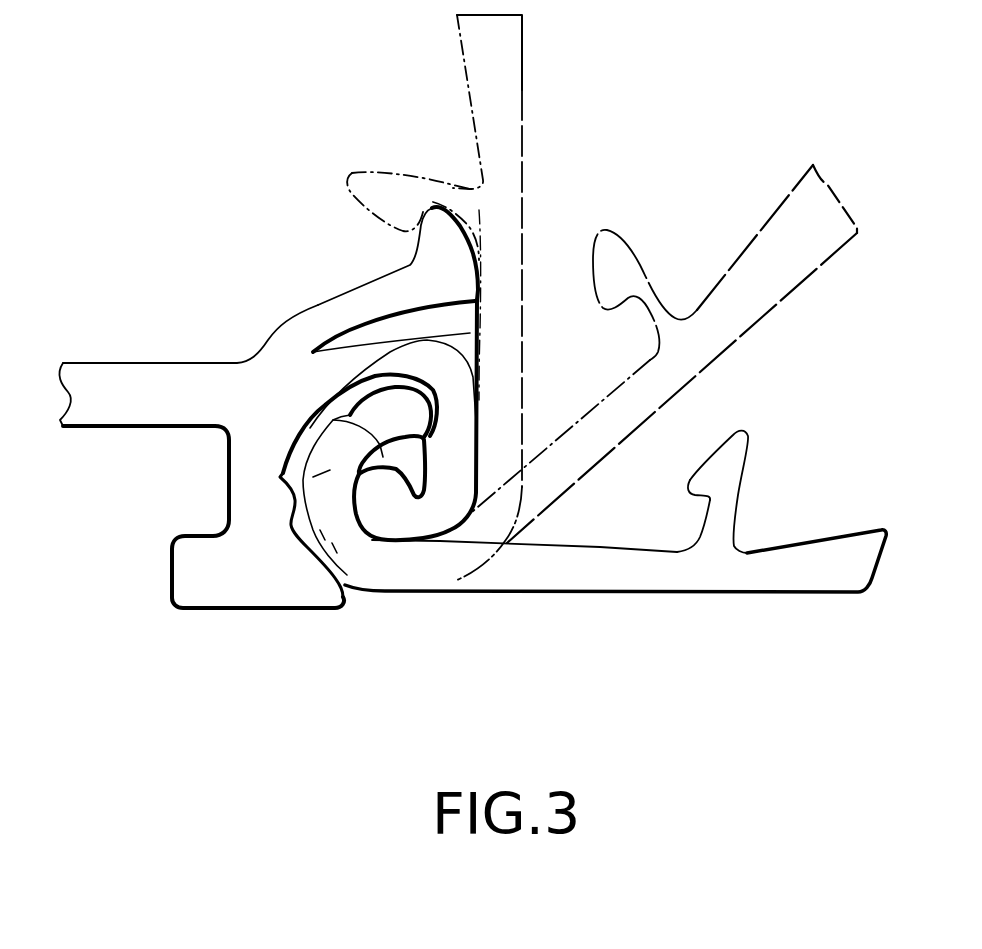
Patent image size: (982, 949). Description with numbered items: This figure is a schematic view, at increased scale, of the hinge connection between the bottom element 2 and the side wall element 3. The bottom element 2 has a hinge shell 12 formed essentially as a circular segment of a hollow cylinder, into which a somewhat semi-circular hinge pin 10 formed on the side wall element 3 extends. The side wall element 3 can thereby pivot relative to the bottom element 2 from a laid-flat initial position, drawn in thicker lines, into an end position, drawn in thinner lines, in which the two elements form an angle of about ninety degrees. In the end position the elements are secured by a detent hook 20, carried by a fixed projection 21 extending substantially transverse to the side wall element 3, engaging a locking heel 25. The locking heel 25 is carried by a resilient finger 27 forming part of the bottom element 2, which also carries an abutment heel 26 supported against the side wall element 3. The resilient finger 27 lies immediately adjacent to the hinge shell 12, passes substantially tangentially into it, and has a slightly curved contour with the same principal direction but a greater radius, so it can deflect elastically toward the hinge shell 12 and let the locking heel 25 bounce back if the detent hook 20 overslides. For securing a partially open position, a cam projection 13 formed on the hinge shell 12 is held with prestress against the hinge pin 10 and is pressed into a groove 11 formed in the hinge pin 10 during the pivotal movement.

The bottom element 2 is at (127, 383).
The side wall element 3 is at (573, 577).
The hinge pin 10 is at (340, 450).
The groove 11 is at (470, 333).
The hinge shell 12 is at (345, 362).
The cam projection 13 is at (292, 497).
The detent hook 20 is at (740, 467).
The fixed projection 21 is at (720, 517).
The locking heel 25 is at (430, 205).
The abutment heel 26 is at (478, 280).
The resilient finger 27 is at (330, 303).